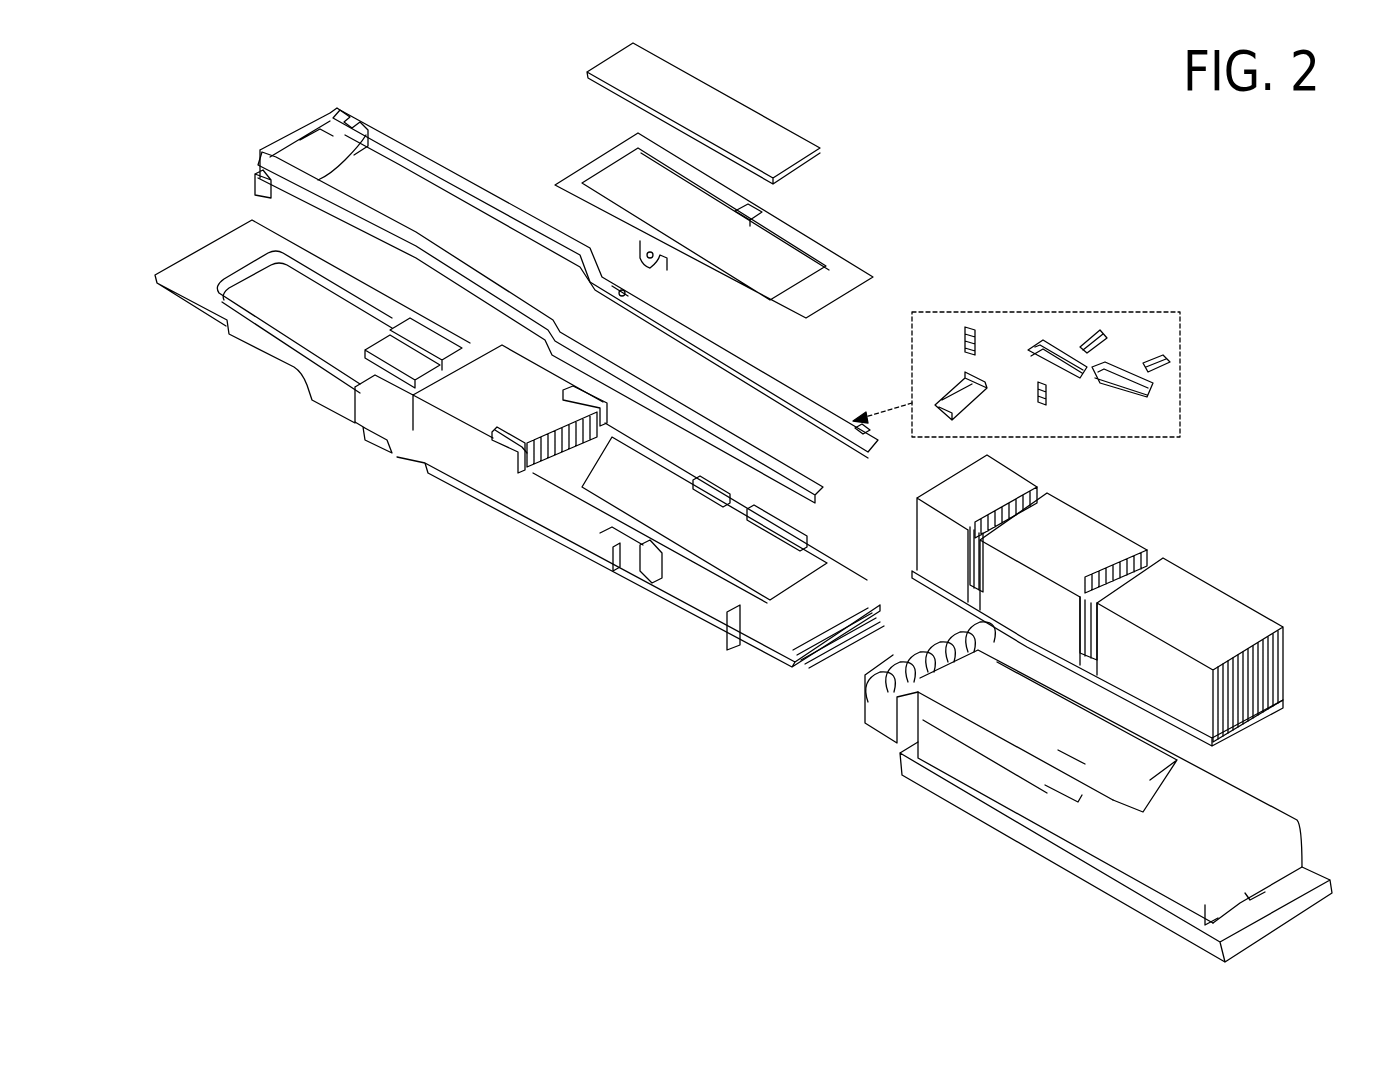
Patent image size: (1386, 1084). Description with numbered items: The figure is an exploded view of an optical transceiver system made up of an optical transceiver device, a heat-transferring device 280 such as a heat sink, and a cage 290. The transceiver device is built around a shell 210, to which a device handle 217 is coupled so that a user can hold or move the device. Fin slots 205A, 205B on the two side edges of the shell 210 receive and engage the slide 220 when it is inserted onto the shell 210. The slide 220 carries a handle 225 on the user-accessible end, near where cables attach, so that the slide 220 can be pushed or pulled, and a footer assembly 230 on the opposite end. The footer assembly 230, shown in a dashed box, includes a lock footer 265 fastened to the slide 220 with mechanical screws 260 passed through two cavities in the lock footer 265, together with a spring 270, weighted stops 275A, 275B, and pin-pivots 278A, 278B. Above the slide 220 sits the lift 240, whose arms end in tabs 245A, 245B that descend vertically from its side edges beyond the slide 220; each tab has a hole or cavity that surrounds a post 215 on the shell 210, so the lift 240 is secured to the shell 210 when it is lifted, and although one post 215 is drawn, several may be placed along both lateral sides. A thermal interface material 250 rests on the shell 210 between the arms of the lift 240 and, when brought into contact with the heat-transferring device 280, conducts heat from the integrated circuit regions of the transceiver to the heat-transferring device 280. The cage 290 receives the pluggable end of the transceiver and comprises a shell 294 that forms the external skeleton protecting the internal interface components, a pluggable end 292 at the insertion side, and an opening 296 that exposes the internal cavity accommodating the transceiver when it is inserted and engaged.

The fin slot 205A is at (532, 476).
The fin slot 205B is at (601, 425).
The shell 210 is at (443, 487).
The post 215 is at (648, 575).
The device handle 217 is at (275, 343).
The slide 220 is at (430, 157).
The handle 225 is at (300, 141).
The footer assembly 230 is at (1180, 424).
The lift 240 is at (587, 157).
The tab 245A is at (655, 272).
The tab 245B is at (745, 221).
The thermal interface material 250 is at (803, 158).
The mechanical screws 260 is at (965, 327).
The lock footer 265 is at (943, 395).
The spring 270 is at (1047, 398).
The weighted stop 275A is at (1055, 342).
The weighted stop 275B is at (1150, 389).
The pin-pivot 278A is at (1100, 329).
The pin-pivot 278B is at (1173, 360).
The heat-transferring device 280 is at (1243, 607).
The cage 290 is at (1273, 800).
The pluggable end 292 is at (865, 690).
The shell 294 is at (992, 768).
The opening 296 is at (1070, 753).